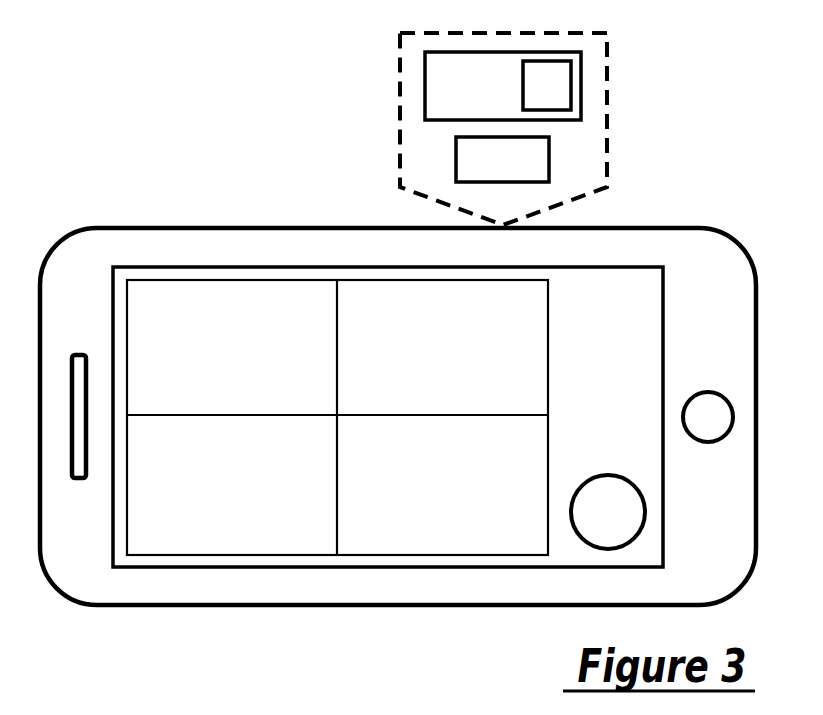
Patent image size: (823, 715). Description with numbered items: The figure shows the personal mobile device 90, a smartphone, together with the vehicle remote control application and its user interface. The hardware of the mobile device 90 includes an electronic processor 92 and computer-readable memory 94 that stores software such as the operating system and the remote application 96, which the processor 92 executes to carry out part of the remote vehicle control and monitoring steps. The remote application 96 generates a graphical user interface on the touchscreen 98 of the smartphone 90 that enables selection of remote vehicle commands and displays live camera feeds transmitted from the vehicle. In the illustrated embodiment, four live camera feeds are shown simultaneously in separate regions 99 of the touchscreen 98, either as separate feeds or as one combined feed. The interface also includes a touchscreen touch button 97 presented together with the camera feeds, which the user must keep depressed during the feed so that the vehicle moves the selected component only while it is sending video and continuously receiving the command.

The personal mobile device 90 is at (717, 229).
The electronic processor 92 is at (549, 160).
The computer-readable memory 94 is at (425, 84).
The remote application 96 is at (572, 83).
The touchscreen touch button 97 is at (593, 526).
The touchscreen 98 is at (410, 267).
The regions 99 is at (418, 453).